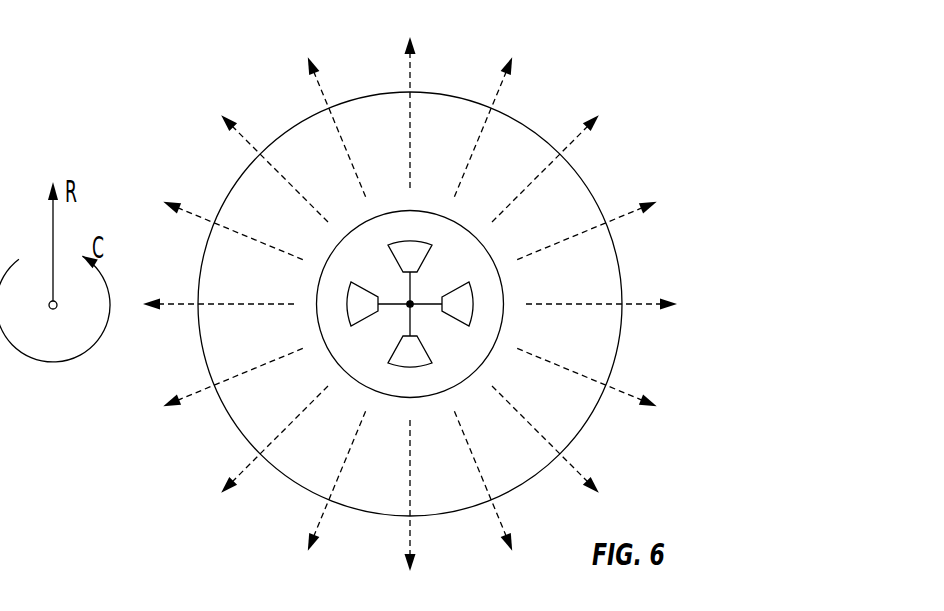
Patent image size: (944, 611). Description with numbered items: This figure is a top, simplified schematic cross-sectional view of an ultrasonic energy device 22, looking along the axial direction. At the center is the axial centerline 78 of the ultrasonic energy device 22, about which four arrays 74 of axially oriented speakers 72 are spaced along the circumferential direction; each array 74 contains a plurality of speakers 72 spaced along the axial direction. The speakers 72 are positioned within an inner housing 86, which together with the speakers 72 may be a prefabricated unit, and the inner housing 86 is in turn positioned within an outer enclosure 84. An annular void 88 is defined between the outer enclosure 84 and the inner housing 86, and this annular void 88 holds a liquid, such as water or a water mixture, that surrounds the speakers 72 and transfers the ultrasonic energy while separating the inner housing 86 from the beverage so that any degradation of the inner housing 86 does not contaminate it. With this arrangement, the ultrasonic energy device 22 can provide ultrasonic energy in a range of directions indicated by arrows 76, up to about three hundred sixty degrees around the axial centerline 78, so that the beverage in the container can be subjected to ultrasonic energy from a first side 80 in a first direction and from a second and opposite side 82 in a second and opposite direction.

The ultrasonic energy device 22 is at (175, 90).
The speakers 72 is at (428, 245).
The arrays of speakers 74 is at (380, 263).
The arrows 76 is at (620, 393).
The axial centerline 78 is at (410, 304).
The first side 80 is at (195, 355).
The second side 82 is at (635, 295).
The outer enclosure 84 is at (456, 97).
The inner housing 86 is at (503, 288).
The annular void 88 is at (583, 339).